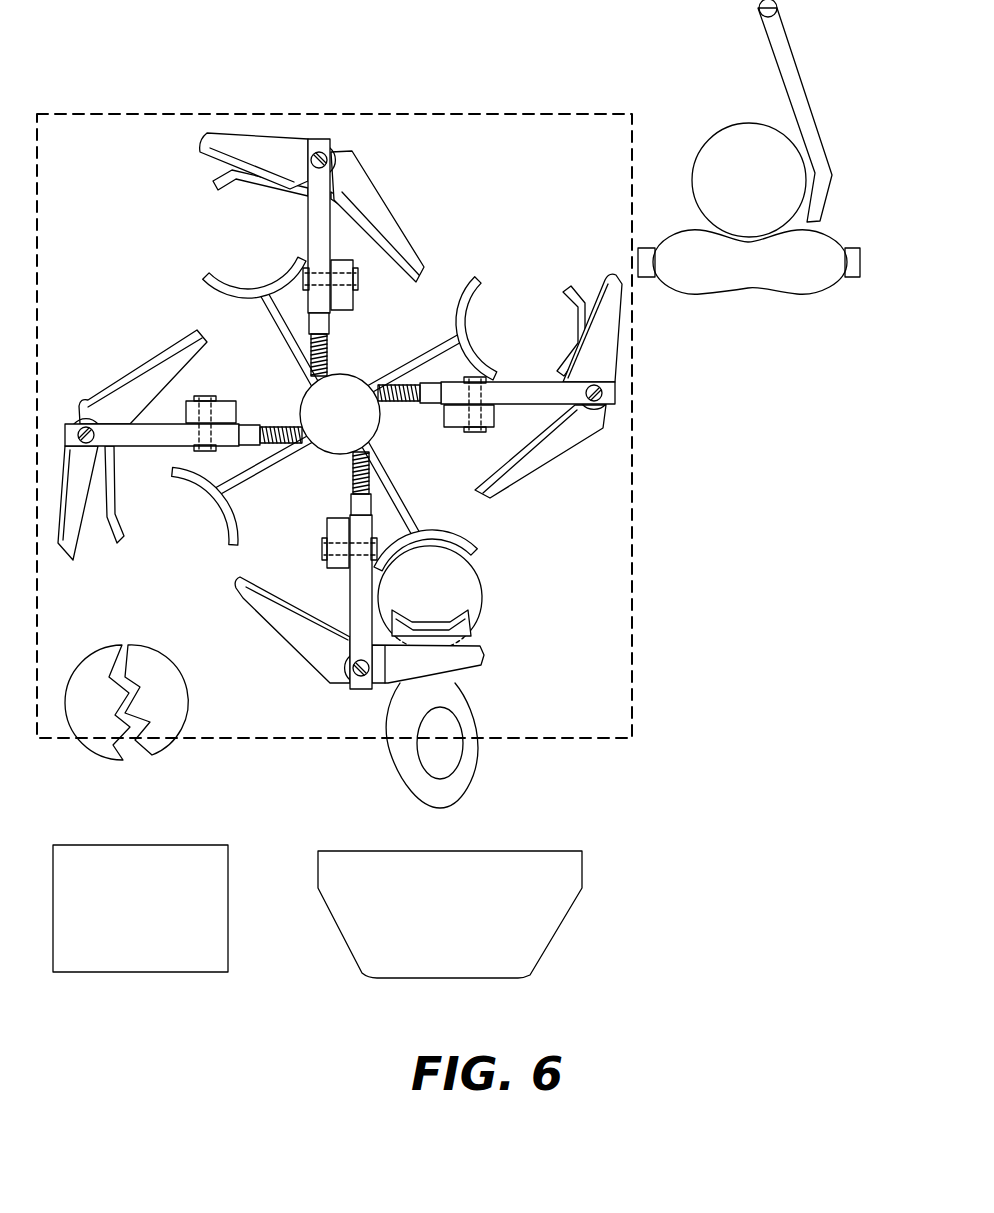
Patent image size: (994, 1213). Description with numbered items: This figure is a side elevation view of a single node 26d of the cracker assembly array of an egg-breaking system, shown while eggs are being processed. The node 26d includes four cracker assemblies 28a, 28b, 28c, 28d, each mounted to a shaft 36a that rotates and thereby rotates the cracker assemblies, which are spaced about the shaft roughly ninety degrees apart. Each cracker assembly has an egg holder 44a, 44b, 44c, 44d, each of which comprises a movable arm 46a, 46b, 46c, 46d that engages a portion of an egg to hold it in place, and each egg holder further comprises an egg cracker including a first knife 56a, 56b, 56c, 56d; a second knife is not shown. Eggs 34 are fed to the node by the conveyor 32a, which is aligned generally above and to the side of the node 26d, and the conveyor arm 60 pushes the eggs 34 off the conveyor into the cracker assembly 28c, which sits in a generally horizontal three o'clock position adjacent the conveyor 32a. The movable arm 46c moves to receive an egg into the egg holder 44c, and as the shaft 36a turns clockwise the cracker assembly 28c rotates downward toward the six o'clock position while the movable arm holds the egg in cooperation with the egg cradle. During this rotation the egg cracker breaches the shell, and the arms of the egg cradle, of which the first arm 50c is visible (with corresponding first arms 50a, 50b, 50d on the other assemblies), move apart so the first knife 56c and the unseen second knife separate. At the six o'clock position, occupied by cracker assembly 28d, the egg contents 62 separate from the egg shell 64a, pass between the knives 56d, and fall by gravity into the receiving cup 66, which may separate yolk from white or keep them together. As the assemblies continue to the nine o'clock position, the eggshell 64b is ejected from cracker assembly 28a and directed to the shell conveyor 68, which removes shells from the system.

The node 26d is at (88, 108).
The cracker assembly 28a is at (83, 390).
The cracker assembly 28b is at (322, 128).
The cracker assembly 28c is at (523, 264).
The cracker assembly 28d is at (550, 575).
The conveyor 32a is at (808, 296).
The egg 34 is at (737, 193).
The shaft 36a is at (350, 378).
The egg holder 44a is at (180, 540).
The egg holder 44b is at (200, 237).
The egg holder 44c is at (546, 270).
The egg holder 44d is at (497, 550).
The movable arm 46a is at (235, 527).
The movable arm 46b is at (265, 300).
The movable arm 46c is at (460, 333).
The movable arm 46d is at (420, 530).
The first arm 50a is at (114, 502).
The first arm 50b is at (242, 190).
The first arm 50c is at (572, 318).
The first arm 50d is at (484, 618).
The first knife 56a is at (65, 543).
The first knife 56b is at (246, 140).
The first knife 56c is at (619, 332).
The first knife 56d is at (484, 652).
The conveyor arm 60 is at (812, 105).
The egg contents 62 is at (473, 723).
The egg shell 64a is at (464, 580).
The eggshell 64b is at (181, 681).
The receiving cup 66 is at (583, 869).
The shell conveyor 68 is at (177, 975).